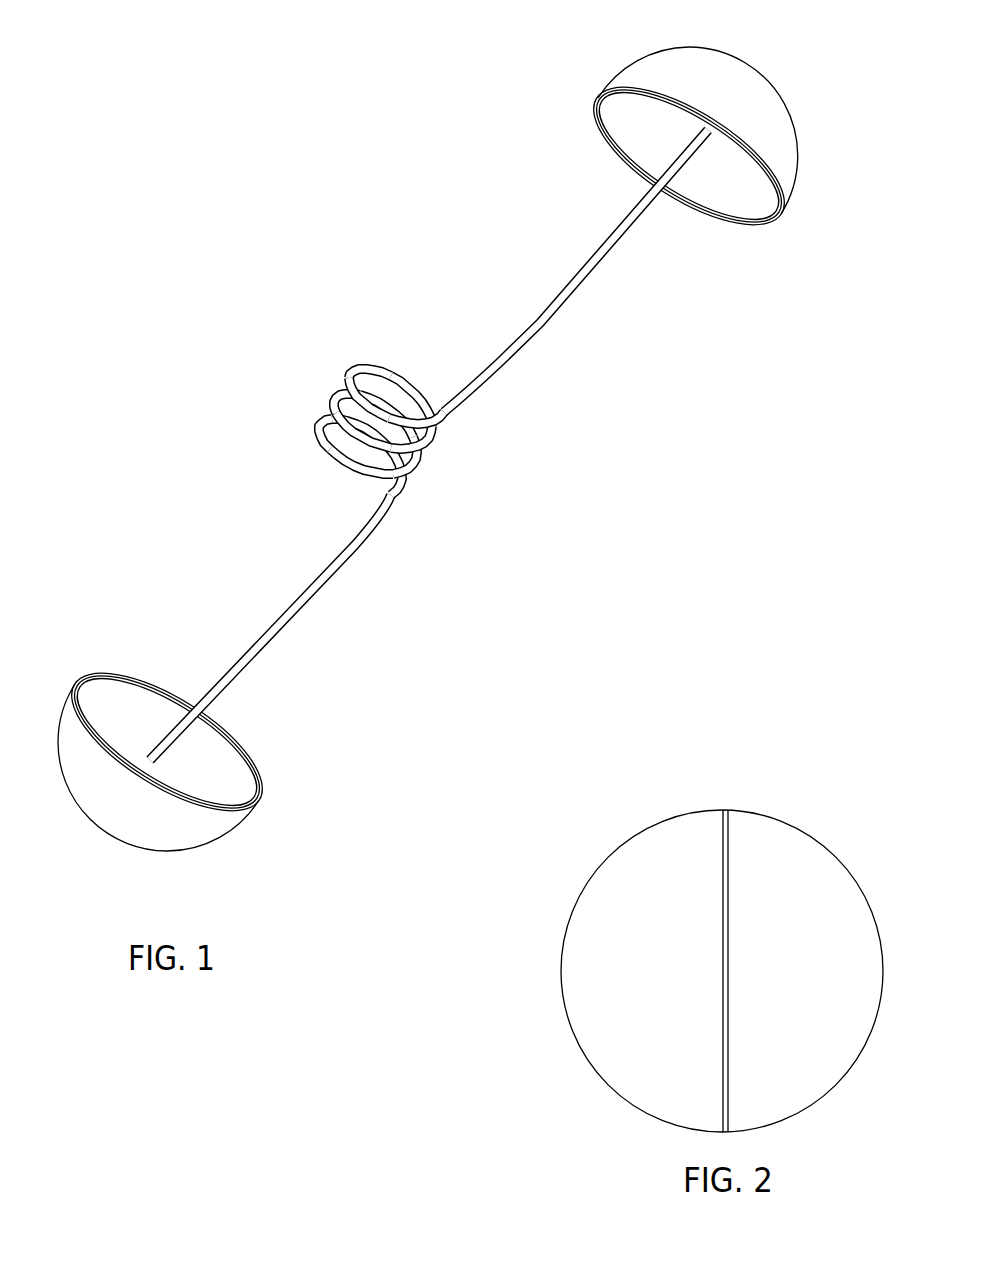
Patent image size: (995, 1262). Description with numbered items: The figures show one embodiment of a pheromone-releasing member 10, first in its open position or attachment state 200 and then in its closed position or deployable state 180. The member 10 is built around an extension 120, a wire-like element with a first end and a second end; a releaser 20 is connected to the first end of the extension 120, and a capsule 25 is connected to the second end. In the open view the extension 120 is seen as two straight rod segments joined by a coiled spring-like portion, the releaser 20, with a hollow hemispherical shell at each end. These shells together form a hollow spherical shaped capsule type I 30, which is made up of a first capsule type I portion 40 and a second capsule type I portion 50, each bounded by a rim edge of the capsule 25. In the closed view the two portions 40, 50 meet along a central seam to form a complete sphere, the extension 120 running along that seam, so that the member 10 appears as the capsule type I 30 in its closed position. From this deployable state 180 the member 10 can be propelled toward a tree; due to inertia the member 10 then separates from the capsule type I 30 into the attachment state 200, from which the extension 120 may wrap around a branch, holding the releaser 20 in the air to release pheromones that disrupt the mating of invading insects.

In FIG. 1, the member 10 is at (429, 454).
In FIG. 2, the member 10 is at (669, 945).
In FIG. 1, the releaser 20 is at (340, 390).
In FIG. 1, the capsule 25 is at (421, 459).
In FIG. 2, the capsule 25 is at (722, 976).
In FIG. 1, the capsule type I 30 is at (429, 459).
In FIG. 2, the capsule type I 30 is at (723, 857).
In FIG. 1, the first capsule type I portion 40 is at (133, 837).
In FIG. 2, the first capsule type I portion 40 is at (663, 987).
In FIG. 1, the second capsule type I portion 50 is at (770, 105).
In FIG. 2, the second capsule type I portion 50 is at (801, 987).
In FIG. 1, the extension 120 is at (293, 618).
In FIG. 2, the deployable state 180 is at (669, 954).
In FIG. 1, the attachment state 200 is at (429, 445).